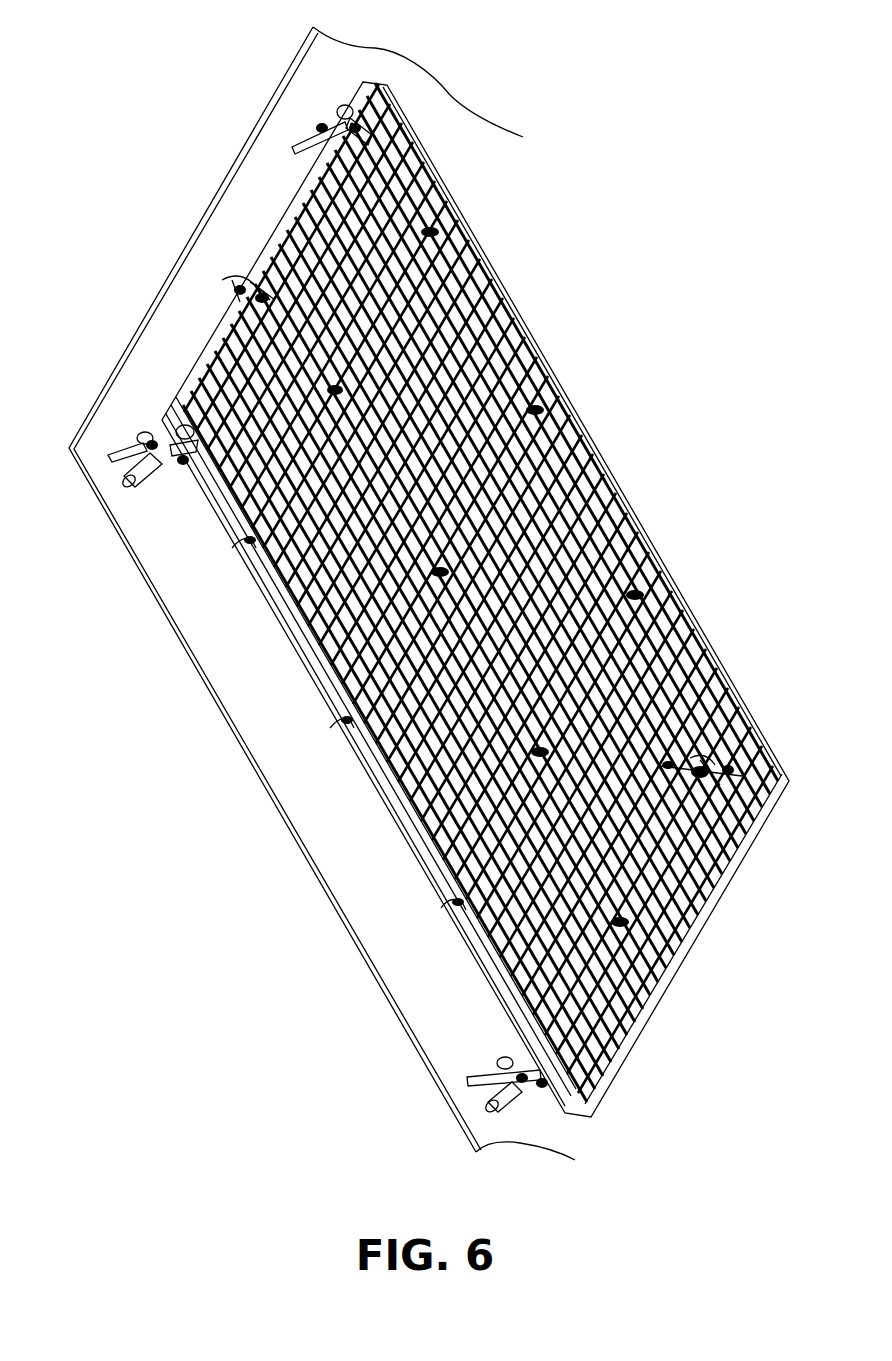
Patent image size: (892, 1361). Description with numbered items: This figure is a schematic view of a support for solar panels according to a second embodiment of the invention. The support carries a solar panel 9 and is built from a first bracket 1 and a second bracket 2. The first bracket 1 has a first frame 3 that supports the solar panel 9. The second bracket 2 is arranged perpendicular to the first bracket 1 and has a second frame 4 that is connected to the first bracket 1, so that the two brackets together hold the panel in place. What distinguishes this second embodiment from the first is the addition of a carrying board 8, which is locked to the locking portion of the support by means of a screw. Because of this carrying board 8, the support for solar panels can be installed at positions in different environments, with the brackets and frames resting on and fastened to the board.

The first bracket 1 is at (307, 678).
The second bracket 2 is at (133, 492).
The first frame 3 is at (455, 905).
The second frame 4 is at (467, 1077).
The carrying board 8 is at (385, 992).
The solar panel 9 is at (637, 1050).